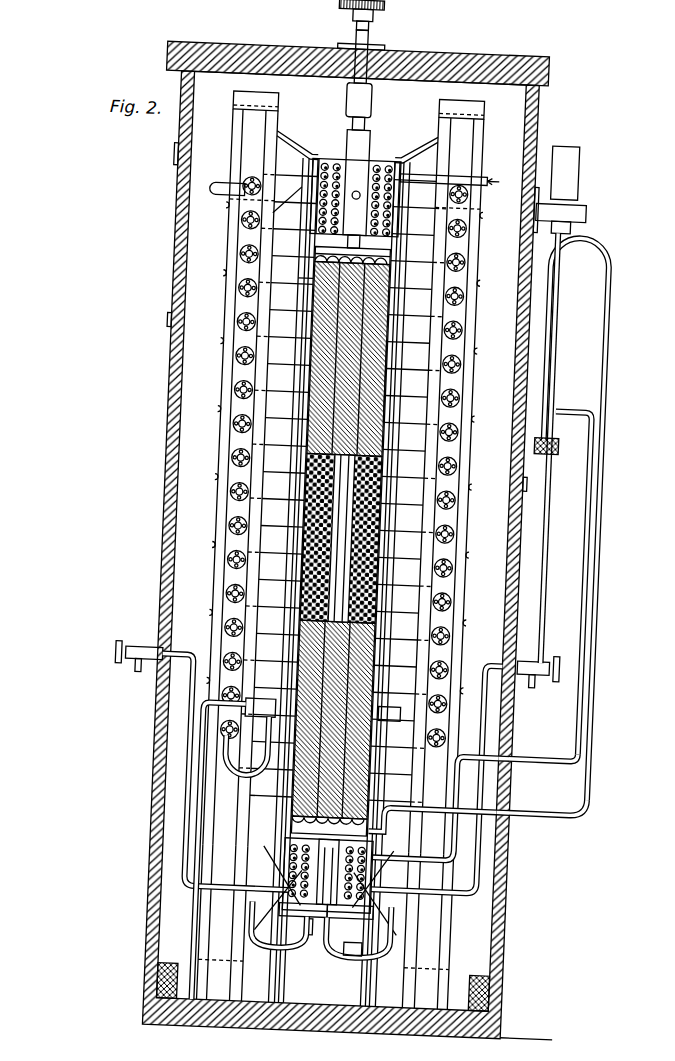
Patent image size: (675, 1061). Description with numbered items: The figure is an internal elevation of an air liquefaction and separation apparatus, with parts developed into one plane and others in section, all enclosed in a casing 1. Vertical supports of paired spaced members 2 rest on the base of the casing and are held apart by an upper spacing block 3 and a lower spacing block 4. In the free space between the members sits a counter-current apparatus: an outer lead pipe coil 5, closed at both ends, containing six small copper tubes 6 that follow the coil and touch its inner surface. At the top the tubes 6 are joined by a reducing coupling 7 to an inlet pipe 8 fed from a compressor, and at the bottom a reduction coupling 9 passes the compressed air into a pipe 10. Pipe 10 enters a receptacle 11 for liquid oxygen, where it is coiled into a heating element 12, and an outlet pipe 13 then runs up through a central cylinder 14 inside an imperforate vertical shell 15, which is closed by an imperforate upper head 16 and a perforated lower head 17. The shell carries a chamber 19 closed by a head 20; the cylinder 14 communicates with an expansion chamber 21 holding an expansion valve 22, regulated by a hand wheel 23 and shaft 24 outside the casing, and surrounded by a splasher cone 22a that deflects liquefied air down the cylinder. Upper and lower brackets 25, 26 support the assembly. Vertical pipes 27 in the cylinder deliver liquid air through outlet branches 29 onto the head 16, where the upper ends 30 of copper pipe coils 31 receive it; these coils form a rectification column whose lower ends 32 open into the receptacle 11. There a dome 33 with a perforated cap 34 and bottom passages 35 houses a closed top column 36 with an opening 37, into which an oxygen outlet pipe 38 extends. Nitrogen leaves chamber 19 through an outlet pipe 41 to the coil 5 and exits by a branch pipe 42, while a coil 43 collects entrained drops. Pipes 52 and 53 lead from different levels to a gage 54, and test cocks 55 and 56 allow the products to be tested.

The casing 1 is at (160, 306).
The spaced members 2 is at (246, 428).
The upper spacing block 3 is at (240, 142).
The lower spacing block 4 is at (230, 936).
The outer coil of pipe 5 is at (286, 185).
The small conduits or tubes 6 is at (464, 710).
The reducing coupling or nipple 7 is at (400, 172).
The inlet pipe 8 is at (474, 182).
The reduction nipple or coupling 9 is at (248, 745).
The pipe 10 is at (206, 802).
The chamber or receptacle 11 is at (300, 888).
The heating element 12 is at (301, 860).
The outlet pipe 13 is at (355, 958).
The cylinder 14 is at (377, 546).
The vertical cylinder or shell 15 is at (377, 378).
The upper head 16 is at (346, 243).
The lower head 17 is at (301, 826).
The chamber 19 is at (378, 214).
The head 20 is at (330, 168).
The expansion chamber 21 is at (303, 226).
The expansion valve 22 is at (352, 150).
The splasher cone 22a is at (333, 80).
The hand wheel 23 is at (360, 6).
The shaft 24 is at (352, 108).
The upper bracket 25 is at (272, 138).
The lower bracket 26 is at (282, 952).
The vertically disposed pipes 27 is at (377, 480).
The outlet branches 29 is at (301, 254).
The upper ends 30 is at (376, 262).
The pipes 31 is at (377, 348).
The lower ends 32 is at (432, 828).
The dome or bell 33 is at (435, 813).
The perforated top or cap 34 is at (333, 872).
The passages 35 is at (360, 918).
The closed top column 36 is at (346, 875).
The opening 37 is at (308, 918).
The oxygen outlet pipe 38 is at (394, 719).
The outlet pipe 41 is at (290, 286).
The branch pipe 42 is at (205, 202).
The coil 43 is at (287, 199).
The pipe 52 is at (598, 292).
The pipe 53 is at (596, 755).
The gage 54 is at (560, 402).
The test cock 55 is at (140, 680).
The test cock 56 is at (540, 680).